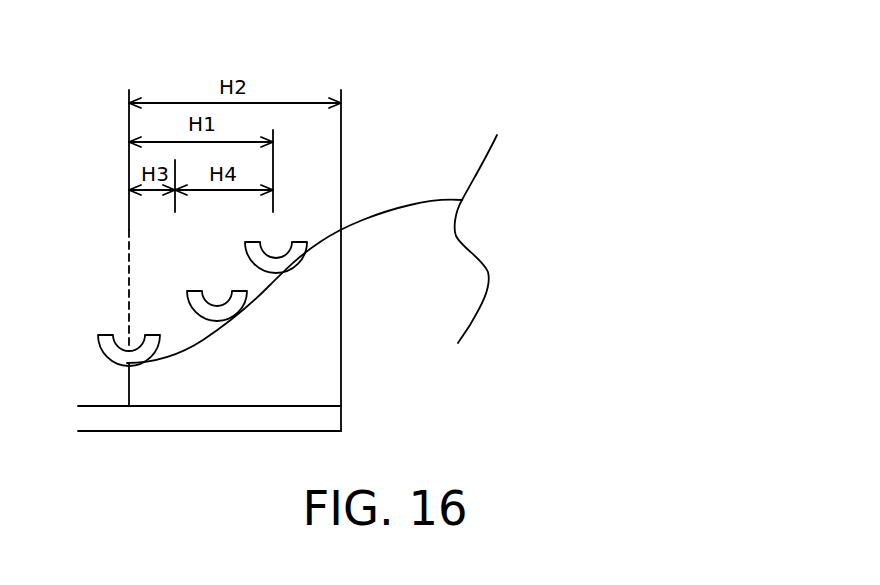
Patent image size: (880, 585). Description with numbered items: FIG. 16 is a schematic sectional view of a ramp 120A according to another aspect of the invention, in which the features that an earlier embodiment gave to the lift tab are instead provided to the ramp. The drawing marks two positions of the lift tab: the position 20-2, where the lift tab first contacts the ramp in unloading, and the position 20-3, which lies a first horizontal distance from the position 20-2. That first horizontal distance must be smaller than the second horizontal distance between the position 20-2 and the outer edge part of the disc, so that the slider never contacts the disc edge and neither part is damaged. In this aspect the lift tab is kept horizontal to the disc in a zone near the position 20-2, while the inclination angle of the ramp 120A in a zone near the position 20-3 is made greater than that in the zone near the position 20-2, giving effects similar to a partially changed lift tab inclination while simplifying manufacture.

The position of the lift tab 20-2 is at (108, 340).
The position of the lift tab 20-3 is at (283, 262).
The ramp 120A is at (416, 233).